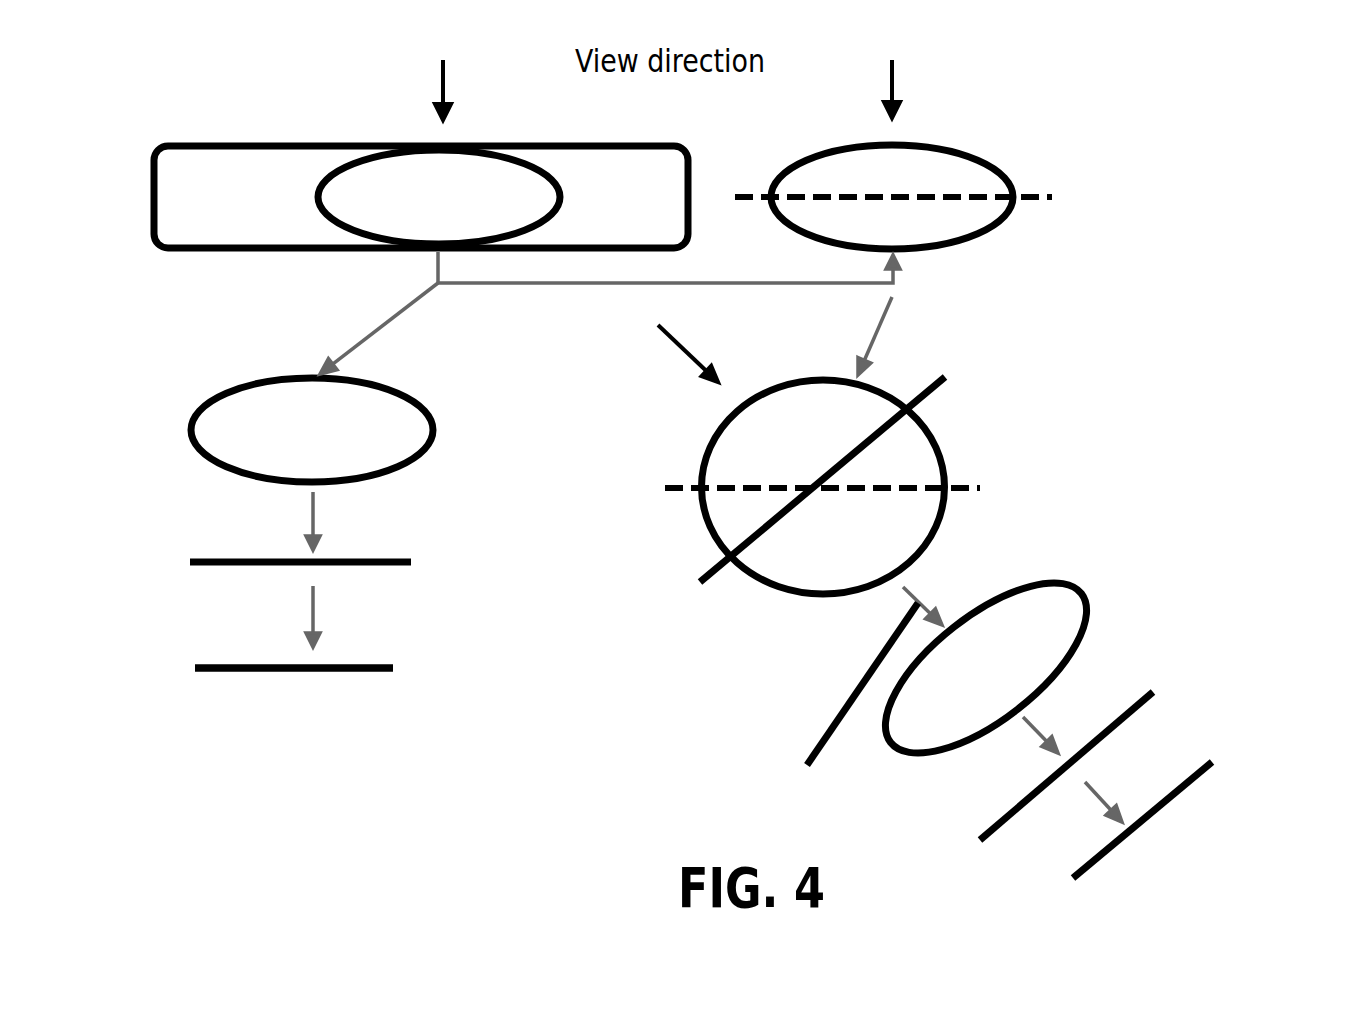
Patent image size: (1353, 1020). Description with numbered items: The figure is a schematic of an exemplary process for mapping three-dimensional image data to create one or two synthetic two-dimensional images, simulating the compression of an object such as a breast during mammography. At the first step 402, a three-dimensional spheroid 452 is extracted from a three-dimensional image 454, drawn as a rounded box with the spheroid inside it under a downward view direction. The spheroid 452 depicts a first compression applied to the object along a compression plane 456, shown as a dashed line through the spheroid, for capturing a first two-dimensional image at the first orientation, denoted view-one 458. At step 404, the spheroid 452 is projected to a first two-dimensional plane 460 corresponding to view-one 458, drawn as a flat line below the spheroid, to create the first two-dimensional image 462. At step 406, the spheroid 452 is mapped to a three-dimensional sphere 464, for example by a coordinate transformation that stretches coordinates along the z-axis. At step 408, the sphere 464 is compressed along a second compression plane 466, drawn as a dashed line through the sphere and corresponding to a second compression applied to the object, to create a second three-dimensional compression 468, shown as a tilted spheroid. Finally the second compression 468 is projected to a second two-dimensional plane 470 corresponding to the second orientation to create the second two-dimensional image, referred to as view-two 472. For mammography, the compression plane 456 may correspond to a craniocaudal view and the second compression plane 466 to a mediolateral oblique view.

The spheroid extraction step 402 is at (669, 268).
The first projection step 404 is at (381, 328).
The sphere mapping step 406 is at (909, 336).
The second compression step 408 is at (846, 707).
The 3D spheroid 452 is at (316, 197).
The 3D image 454 is at (297, 140).
The compression plane 456 is at (939, 100).
The view-1 458 is at (351, 688).
The first 2D plane 460 is at (411, 562).
The first 2D image 462 is at (264, 668).
The 3D sphere 464 is at (930, 433).
The second compression plane 466 is at (805, 596).
The second 3D compression 468 is at (1061, 602).
The second 2D plane 470 is at (1150, 683).
The view-2 472 is at (1189, 764).